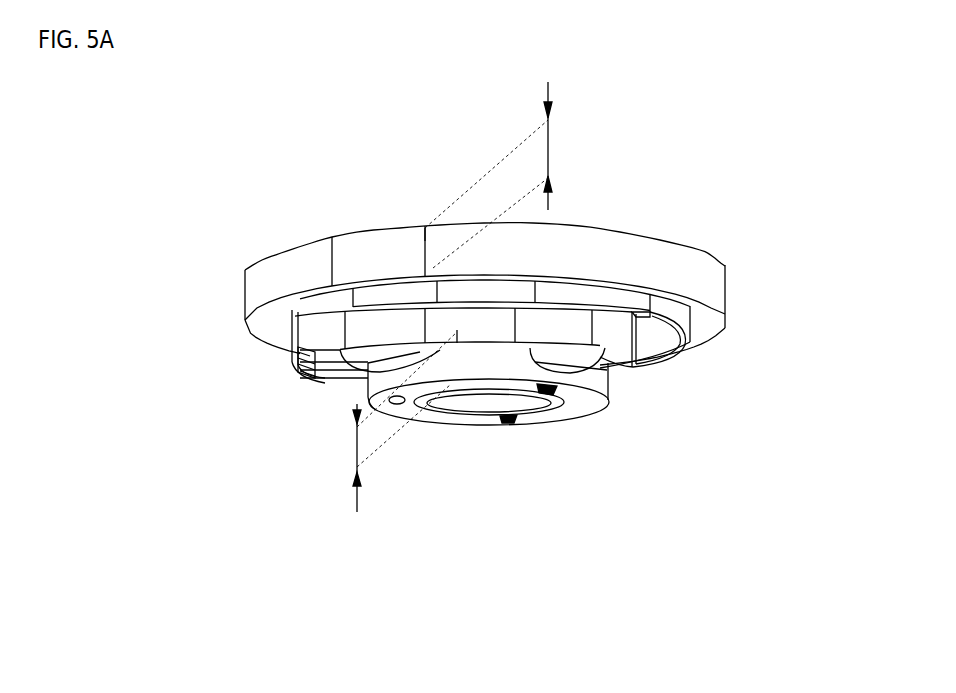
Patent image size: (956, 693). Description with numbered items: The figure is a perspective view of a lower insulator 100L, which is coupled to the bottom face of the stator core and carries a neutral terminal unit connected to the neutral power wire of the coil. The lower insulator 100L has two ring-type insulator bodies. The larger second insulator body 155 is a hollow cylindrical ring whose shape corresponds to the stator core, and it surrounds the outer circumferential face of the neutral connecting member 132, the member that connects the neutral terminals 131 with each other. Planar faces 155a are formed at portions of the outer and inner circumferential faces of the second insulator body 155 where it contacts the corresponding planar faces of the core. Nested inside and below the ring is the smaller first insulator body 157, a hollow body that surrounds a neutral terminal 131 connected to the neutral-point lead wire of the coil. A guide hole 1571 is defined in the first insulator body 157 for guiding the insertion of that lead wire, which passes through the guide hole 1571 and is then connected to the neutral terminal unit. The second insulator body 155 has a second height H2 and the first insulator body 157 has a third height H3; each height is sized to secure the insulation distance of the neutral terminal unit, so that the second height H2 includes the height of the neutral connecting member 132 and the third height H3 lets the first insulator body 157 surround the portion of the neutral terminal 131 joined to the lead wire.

The lower insulator 100L is at (141, 192).
The second insulator body 155 is at (716, 270).
The planar faces 155a is at (372, 252).
The neutral connecting member 132 is at (307, 312).
The neutral terminal 131 is at (312, 386).
The first insulator body 157 is at (580, 405).
The guide hole 1571 is at (545, 420).
The second height H2 is at (549, 146).
The third height H3 is at (358, 452).